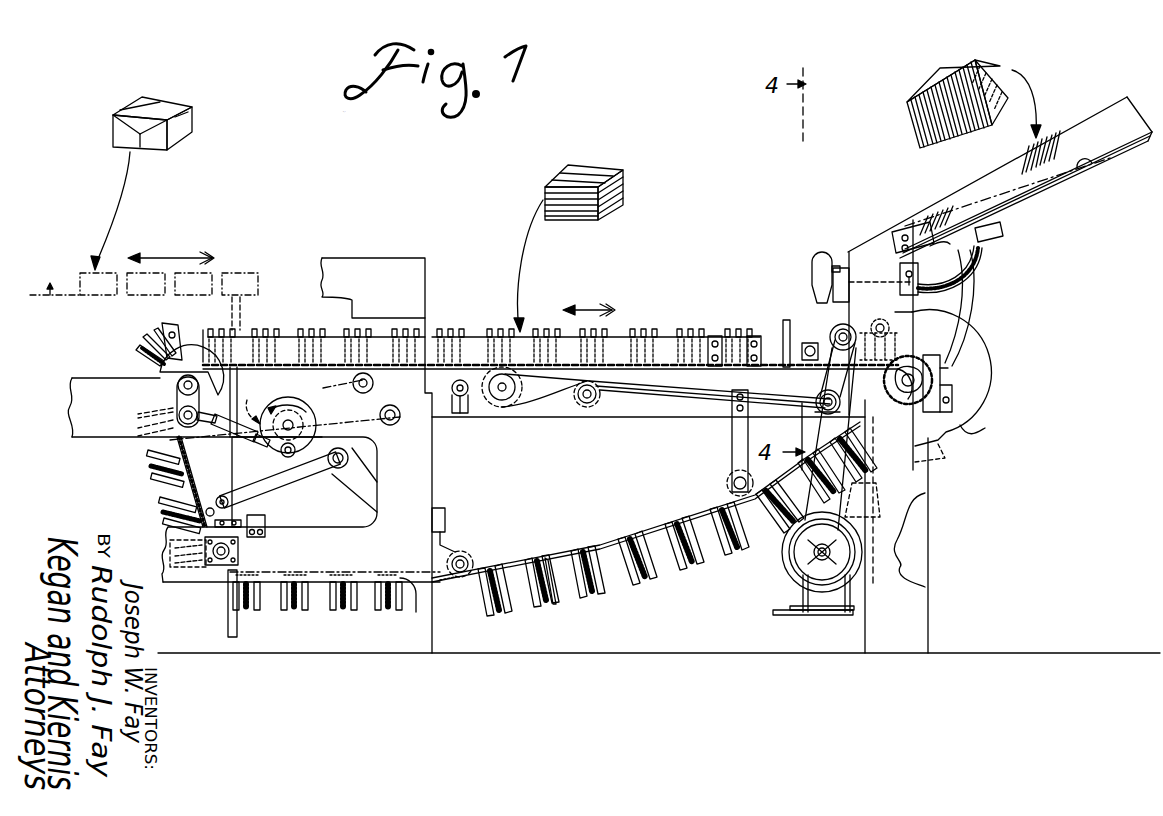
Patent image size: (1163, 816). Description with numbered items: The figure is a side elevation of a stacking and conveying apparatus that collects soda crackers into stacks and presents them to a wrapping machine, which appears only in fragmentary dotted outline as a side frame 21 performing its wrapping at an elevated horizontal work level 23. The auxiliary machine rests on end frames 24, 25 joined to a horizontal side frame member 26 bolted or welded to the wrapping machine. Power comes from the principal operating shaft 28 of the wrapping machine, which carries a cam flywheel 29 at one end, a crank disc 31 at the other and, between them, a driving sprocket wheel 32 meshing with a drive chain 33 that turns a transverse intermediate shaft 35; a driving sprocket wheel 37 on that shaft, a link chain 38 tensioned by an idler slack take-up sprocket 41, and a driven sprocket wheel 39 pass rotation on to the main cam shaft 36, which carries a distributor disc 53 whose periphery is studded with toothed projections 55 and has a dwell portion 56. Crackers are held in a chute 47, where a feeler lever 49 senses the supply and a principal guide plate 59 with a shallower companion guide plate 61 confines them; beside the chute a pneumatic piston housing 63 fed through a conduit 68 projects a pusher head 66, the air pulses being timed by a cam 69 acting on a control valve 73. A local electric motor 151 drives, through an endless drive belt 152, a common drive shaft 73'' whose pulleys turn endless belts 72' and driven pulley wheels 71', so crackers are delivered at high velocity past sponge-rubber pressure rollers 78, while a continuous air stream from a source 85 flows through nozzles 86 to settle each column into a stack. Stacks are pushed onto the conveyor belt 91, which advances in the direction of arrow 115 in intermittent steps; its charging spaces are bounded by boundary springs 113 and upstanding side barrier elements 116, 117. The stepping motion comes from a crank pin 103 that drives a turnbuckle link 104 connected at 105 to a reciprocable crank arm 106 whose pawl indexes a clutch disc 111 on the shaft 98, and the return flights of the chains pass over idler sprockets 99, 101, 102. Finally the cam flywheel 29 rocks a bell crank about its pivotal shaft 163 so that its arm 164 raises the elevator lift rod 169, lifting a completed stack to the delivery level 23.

The side frame 21 is at (434, 462).
The elevated horizontal work level 23 is at (52, 300).
The end frame 24 is at (915, 607).
The end frame 25 is at (918, 511).
The horizontal side frame member 26 is at (650, 406).
The principal operating shaft 28 is at (294, 424).
The cam flywheel 29 is at (327, 476).
The crank disc 31 is at (293, 415).
The driving sprocket wheel 32 is at (250, 406).
The drive chain 33 is at (390, 425).
The transverse intermediate shaft 35 is at (505, 392).
The main cam shaft 36 is at (910, 372).
The driving sprocket wheel 37 is at (522, 384).
The sprocket fitting link chain 38 is at (704, 408).
The driven sprocket wheel 39 is at (900, 381).
The idler slack take-up sprocket 41 is at (584, 406).
The chute 47 is at (1100, 163).
The feeler lever 49 is at (1003, 226).
The distributor disc 53 is at (978, 386).
The toothed projections 55 is at (985, 426).
The dwell portion 56 is at (965, 352).
The principal guide plate 59 is at (1075, 125).
The companion guide plate 61 is at (1088, 168).
The pneumatic piston housing 63 is at (915, 250).
The pusher head 66 is at (942, 242).
The conduit 68 is at (960, 280).
The cam 69 is at (862, 406).
The driven pulley wheel 71' is at (820, 345).
The endless belt 72' is at (801, 394).
The control valve 73 is at (942, 447).
The common drive shaft 73'' is at (802, 424).
The pressure wheel 78 is at (833, 298).
The air source 85 is at (781, 555).
The nozzle 86 is at (812, 280).
The conveyor belt 91 is at (600, 510).
The intermittent motion shaft 98 is at (160, 375).
The idler sprocket 99 is at (216, 565).
The idler sprocket 101 is at (470, 555).
The idler sprocket 102 is at (727, 486).
The crank pin 103 is at (284, 452).
The turnbuckle link 104 is at (268, 447).
The pivotal connection 105 is at (178, 417).
The reciprocable crank arm 106 is at (160, 408).
The clutch disc 111 is at (180, 348).
The boundary spring 113 is at (300, 608).
The arrow 115 is at (585, 310).
The side barrier element 116 is at (597, 577).
The side barrier element 117 is at (644, 563).
The electric motor 151 is at (800, 597).
The endless drive belt 152 is at (855, 486).
The pivotal shaft 163 is at (346, 464).
The bell crank arm 164 is at (290, 478).
The elevator lift rod 169 is at (226, 617).